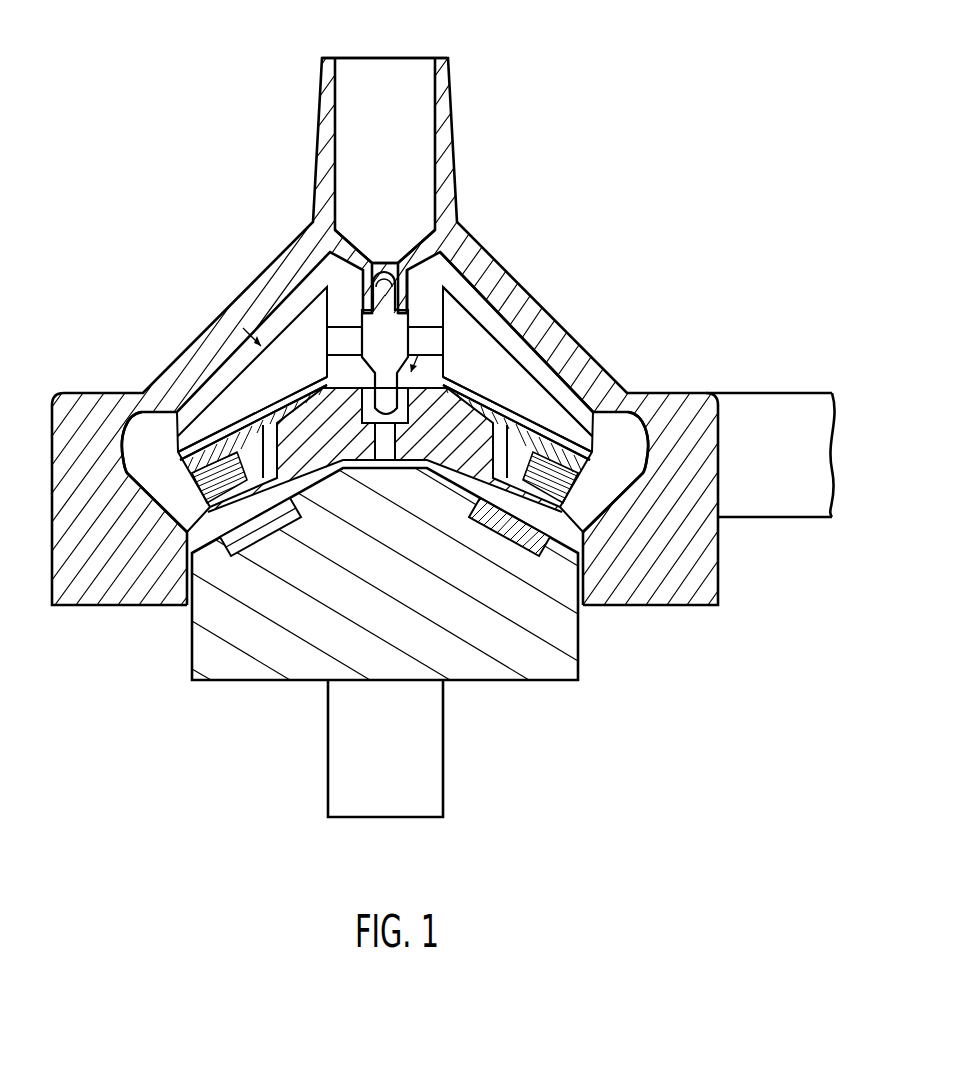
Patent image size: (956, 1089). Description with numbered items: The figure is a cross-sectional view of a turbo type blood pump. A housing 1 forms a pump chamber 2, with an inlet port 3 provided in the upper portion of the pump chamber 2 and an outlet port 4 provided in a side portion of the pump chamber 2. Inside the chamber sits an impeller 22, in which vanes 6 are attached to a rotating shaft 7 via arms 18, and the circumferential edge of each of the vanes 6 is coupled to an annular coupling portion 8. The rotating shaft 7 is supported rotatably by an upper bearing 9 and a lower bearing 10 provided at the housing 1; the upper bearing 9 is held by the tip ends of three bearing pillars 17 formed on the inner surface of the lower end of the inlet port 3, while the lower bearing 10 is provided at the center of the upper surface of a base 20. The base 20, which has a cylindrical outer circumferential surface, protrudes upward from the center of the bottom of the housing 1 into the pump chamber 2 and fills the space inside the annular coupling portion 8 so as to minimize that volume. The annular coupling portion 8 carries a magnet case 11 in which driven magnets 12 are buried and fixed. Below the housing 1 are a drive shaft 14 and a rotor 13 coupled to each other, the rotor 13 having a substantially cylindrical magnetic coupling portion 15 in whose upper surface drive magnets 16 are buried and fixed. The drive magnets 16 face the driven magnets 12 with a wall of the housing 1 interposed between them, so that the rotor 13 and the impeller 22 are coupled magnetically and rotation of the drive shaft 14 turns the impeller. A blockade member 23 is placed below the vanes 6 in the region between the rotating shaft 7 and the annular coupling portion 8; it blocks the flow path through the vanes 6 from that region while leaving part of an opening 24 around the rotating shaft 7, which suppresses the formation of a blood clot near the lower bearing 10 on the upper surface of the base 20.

The housing 1 is at (697, 410).
The pump chamber 2 is at (447, 240).
The inlet port 3 is at (447, 111).
The outlet port 4 is at (780, 410).
The vanes 6 is at (510, 303).
The rotating shaft 7 is at (350, 327).
The annular coupling portion 8 is at (160, 430).
The upper bearing 9 is at (376, 330).
The lower bearing 10 is at (262, 417).
The magnet case 11 is at (577, 373).
The driven magnets 12 is at (597, 500).
The rotor 13 is at (297, 712).
The drive shaft 14 is at (427, 750).
The magnetic coupling portion 15 is at (547, 657).
The drive magnets 16 is at (240, 540).
The bearing pillars 17 is at (362, 253).
The arms 18 is at (298, 340).
The base 20 is at (215, 455).
The impeller 22 is at (260, 345).
The blockade member 23 is at (540, 330).
The opening 24 is at (477, 280).